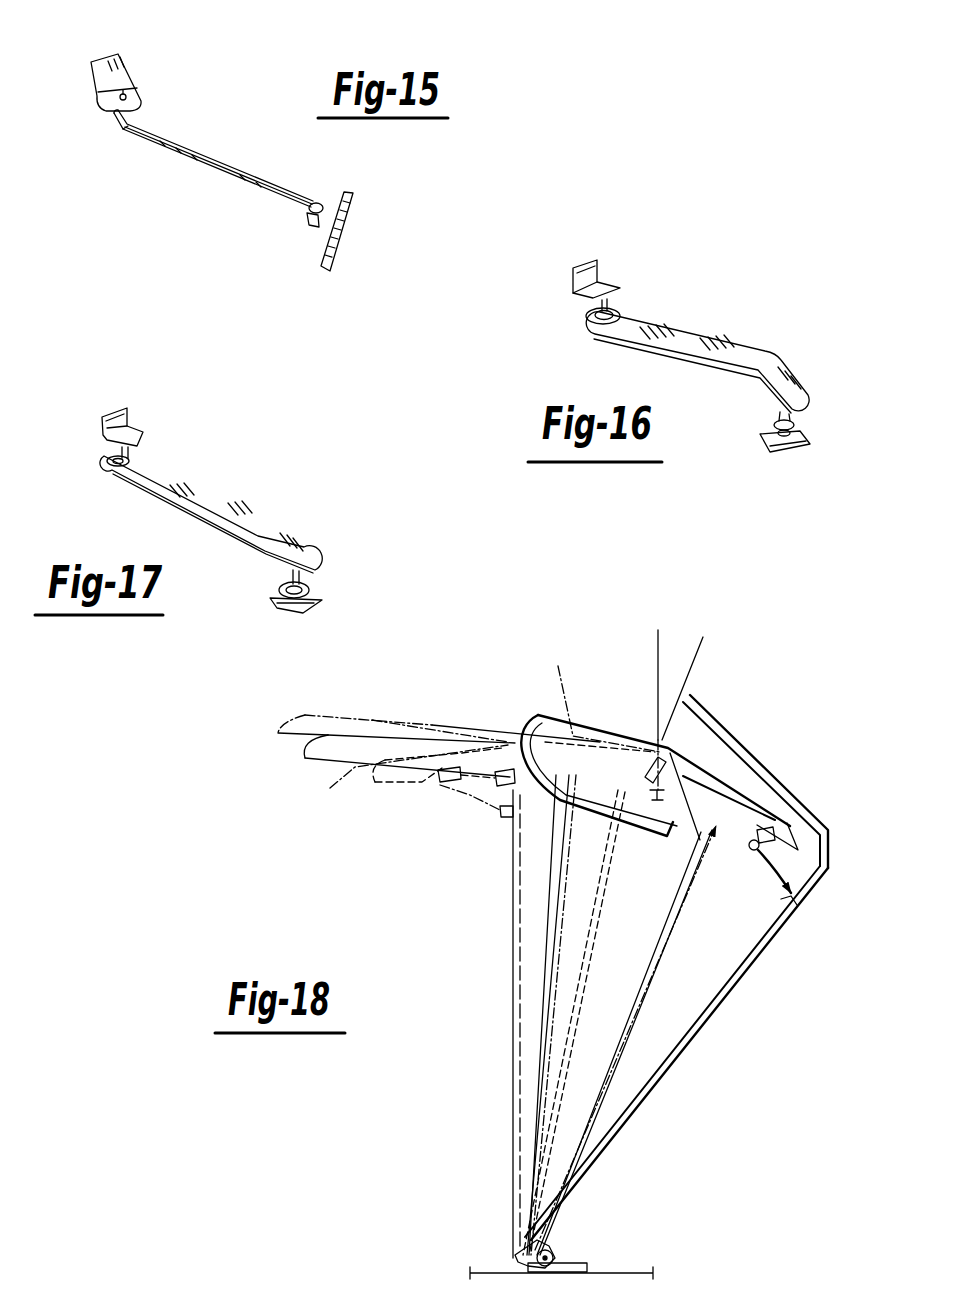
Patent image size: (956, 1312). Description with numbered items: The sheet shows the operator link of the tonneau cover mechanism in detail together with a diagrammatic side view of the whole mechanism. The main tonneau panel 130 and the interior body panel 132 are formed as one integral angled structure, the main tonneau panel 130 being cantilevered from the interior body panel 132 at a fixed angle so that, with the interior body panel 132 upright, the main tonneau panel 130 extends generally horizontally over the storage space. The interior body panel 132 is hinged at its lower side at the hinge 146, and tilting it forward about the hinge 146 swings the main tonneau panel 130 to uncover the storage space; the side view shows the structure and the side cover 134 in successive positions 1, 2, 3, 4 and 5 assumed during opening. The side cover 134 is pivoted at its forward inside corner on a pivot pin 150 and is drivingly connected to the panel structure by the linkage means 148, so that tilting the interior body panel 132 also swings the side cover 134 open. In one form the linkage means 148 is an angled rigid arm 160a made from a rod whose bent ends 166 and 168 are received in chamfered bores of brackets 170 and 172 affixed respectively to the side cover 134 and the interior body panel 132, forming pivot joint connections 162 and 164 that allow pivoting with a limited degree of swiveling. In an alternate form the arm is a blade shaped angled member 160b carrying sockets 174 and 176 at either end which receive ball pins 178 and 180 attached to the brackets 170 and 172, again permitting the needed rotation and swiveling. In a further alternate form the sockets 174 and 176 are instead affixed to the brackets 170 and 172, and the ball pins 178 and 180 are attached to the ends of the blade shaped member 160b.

In FIG. 18, the main tonneau panel 130 is at (758, 757).
In FIG. 18, the interior body panel 132 is at (679, 1054).
In FIG. 18, the side cover 134 is at (452, 722).
In FIG. 18, the hinge 146 is at (559, 1253).
In FIG. 15, the linkage means 148 is at (215, 181).
In FIG. 16, the linkage means 148 is at (718, 381).
In FIG. 17, the linkage means 148 is at (182, 516).
In FIG. 18, the linkage means 148 is at (485, 800).
In FIG. 18, the pivot pin 150 is at (643, 742).
In FIG. 15, the angled rigid arm 160a is at (212, 145).
In FIG. 16, the blade shaped angled member 160b is at (700, 340).
In FIG. 17, the blade shaped angled member 160b is at (219, 499).
In FIG. 15, the pivot joint connection 162 is at (133, 142).
In FIG. 15, the pivot joint connection 164 is at (293, 205).
In FIG. 18, the pivot joint connection 164 is at (773, 865).
In FIG. 15, the bent end 166 is at (126, 94).
In FIG. 15, the bent end 168 is at (312, 228).
In FIG. 15, the bracket 170 is at (108, 118).
In FIG. 16, the bracket 170 is at (616, 272).
In FIG. 17, the bracket 170 is at (136, 413).
In FIG. 15, the bracket 172 is at (328, 200).
In FIG. 16, the bracket 172 is at (775, 449).
In FIG. 17, the bracket 172 is at (277, 606).
In FIG. 16, the socket 174 is at (623, 313).
In FIG. 17, the socket 174 is at (150, 448).
In FIG. 16, the socket 176 is at (770, 401).
In FIG. 17, the socket 176 is at (311, 589).
In FIG. 16, the ball pin 178 is at (592, 307).
In FIG. 17, the ball pin 178 is at (104, 462).
In FIG. 16, the ball pin 180 is at (795, 448).
In FIG. 17, the ball pin 180 is at (286, 572).
In FIG. 18, the visor position 1 is at (372, 720).
In FIG. 18, the visor position 2 is at (330, 788).
In FIG. 18, the visor position 3 is at (418, 783).
In FIG. 18, the visor position 4 is at (558, 664).
In FIG. 18, the visor position 5 is at (620, 728).